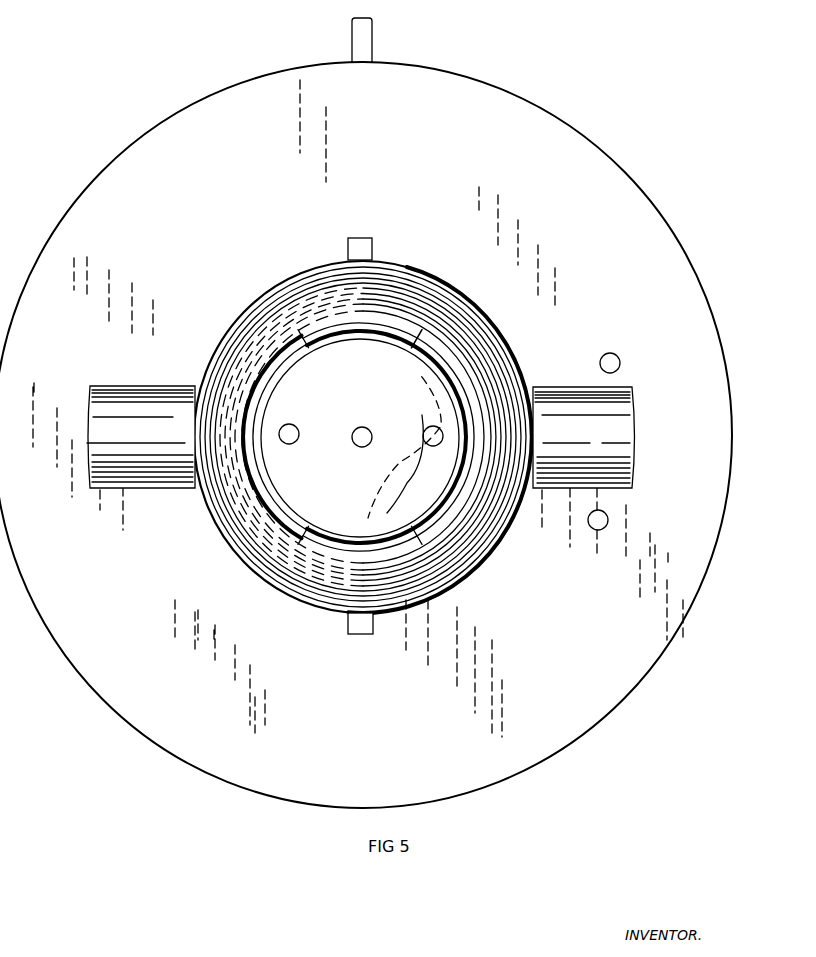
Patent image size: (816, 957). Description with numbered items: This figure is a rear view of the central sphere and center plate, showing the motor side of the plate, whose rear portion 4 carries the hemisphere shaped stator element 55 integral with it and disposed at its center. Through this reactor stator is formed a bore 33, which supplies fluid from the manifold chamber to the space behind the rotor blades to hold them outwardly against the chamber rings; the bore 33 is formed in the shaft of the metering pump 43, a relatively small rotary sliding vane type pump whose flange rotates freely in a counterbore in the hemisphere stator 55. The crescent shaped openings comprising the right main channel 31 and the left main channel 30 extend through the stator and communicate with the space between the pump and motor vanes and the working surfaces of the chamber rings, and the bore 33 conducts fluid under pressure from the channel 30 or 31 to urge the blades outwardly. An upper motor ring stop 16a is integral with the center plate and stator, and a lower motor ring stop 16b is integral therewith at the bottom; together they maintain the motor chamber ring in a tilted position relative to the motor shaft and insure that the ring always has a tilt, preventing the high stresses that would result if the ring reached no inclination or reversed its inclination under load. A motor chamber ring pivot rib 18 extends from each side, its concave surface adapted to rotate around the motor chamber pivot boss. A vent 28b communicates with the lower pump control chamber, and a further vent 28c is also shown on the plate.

The rear portion 4 is at (403, 148).
The upper motor ring stop 16a is at (362, 247).
The lower motor ring stop 16b is at (370, 622).
The motor chamber ring pivot rib 18 is at (88, 407).
The vent 28b is at (608, 518).
The upper mounting hole 28c is at (617, 354).
The left main channel 30 is at (304, 338).
The right main channel 31 is at (421, 332).
The bore 33 is at (352, 440).
The metering pump 43 is at (398, 401).
The hemisphere shaped stator element 55 is at (267, 303).